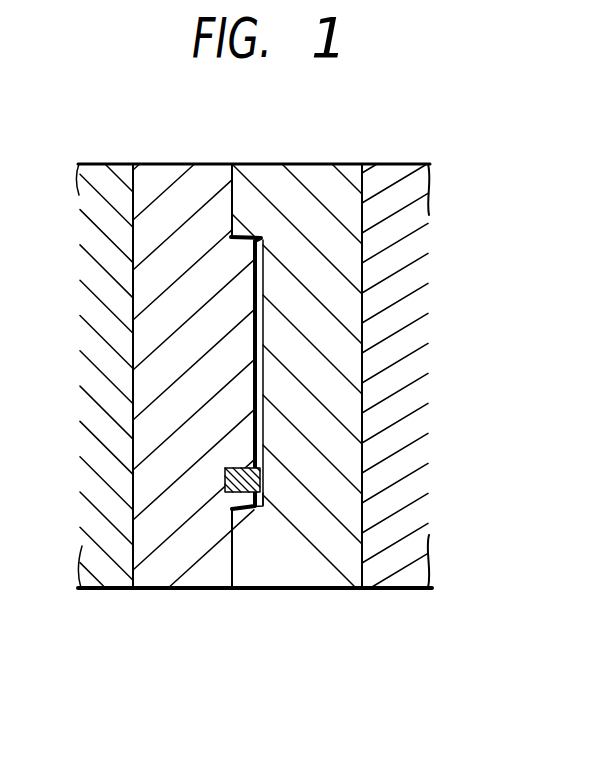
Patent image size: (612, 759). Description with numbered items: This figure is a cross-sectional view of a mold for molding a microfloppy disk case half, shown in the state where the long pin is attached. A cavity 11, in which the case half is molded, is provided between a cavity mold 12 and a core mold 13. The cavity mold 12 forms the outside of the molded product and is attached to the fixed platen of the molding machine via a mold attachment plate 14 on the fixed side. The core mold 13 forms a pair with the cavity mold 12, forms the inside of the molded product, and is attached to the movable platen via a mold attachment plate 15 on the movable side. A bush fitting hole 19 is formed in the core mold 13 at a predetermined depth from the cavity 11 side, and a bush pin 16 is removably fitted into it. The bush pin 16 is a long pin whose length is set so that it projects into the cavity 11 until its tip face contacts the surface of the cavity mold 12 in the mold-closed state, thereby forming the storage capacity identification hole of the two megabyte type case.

The cavity 11 is at (258, 373).
The cavity mold 12 is at (280, 187).
The core mold 13 is at (190, 190).
The mold attachment plate (fixed side attachment plate) 14 is at (393, 550).
The mold attachment plate (moveable side attachment plate) 15 is at (110, 560).
The bush pin 16 is at (263, 482).
The bush fitting hole 19 is at (262, 492).